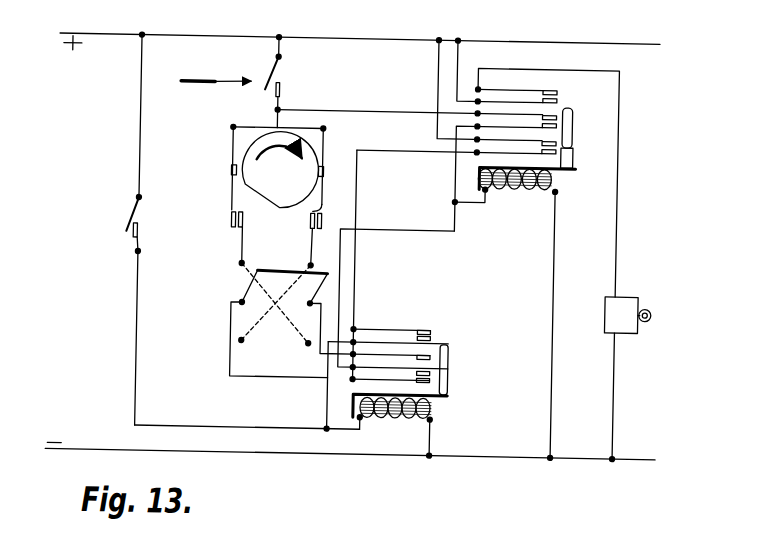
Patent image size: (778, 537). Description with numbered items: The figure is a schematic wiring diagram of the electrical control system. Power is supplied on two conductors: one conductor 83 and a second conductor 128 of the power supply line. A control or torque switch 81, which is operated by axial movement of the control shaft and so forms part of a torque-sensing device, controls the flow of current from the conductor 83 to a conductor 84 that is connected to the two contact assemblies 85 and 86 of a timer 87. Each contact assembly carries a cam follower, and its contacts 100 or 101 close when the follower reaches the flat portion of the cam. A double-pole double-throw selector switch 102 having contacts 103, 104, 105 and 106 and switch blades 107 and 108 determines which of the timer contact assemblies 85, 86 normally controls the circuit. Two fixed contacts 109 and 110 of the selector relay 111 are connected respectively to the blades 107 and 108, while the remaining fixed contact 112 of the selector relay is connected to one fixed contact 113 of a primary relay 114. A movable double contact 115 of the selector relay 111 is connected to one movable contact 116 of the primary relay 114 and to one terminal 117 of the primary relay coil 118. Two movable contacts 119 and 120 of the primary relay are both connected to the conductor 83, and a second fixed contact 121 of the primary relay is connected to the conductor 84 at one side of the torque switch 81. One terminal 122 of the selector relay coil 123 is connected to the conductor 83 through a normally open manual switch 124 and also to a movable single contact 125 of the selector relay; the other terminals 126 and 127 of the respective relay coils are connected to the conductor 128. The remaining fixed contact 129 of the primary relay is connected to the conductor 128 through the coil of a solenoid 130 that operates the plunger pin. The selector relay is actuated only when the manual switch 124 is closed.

The conductor 83 is at (86, 39).
The second conductor 128 is at (96, 452).
The manual switch 124 is at (134, 206).
The control switch 81 is at (278, 64).
The conductor 84 is at (283, 106).
The contact assembly 85 is at (229, 153).
The contact assembly 86 is at (326, 153).
The timer 87 is at (292, 170).
The contacts 100 is at (230, 222).
The contacts 101 is at (319, 216).
The double-pole double-throw selector switch 102 is at (332, 287).
The contact 103 is at (242, 262).
The contact 104 is at (315, 264).
The contact 105 is at (241, 345).
The contact 106 is at (309, 348).
The switch blade 107 is at (240, 305).
The switch blade 108 is at (321, 300).
The fixed contact 109 is at (433, 386).
The fixed contact 110 is at (437, 357).
The selector relay 111 is at (454, 365).
The fixed contact 112 is at (428, 330).
The fixed contact 113 is at (550, 153).
The primary relay 114 is at (579, 158).
The movable double contact 115 is at (447, 374).
The movable contact 116 is at (556, 126).
The terminal 117 is at (485, 191).
The primary relay coil 118 is at (520, 190).
The movable contact 119 is at (558, 147).
The movable contact 120 is at (556, 100).
The second fixed contact 121 is at (556, 117).
The terminal 122 is at (364, 421).
The selector relay coil 123 is at (409, 420).
The movable single contact 125 is at (446, 344).
The terminal 126 is at (434, 422).
The terminal 127 is at (554, 193).
The fixed contact 129 is at (548, 88).
The solenoid 130 is at (631, 298).